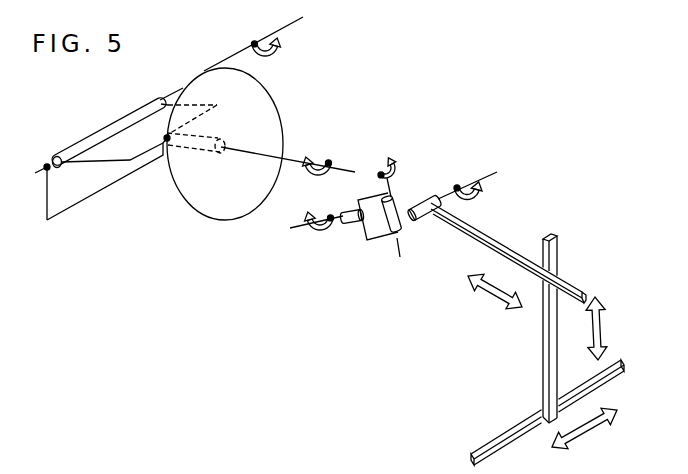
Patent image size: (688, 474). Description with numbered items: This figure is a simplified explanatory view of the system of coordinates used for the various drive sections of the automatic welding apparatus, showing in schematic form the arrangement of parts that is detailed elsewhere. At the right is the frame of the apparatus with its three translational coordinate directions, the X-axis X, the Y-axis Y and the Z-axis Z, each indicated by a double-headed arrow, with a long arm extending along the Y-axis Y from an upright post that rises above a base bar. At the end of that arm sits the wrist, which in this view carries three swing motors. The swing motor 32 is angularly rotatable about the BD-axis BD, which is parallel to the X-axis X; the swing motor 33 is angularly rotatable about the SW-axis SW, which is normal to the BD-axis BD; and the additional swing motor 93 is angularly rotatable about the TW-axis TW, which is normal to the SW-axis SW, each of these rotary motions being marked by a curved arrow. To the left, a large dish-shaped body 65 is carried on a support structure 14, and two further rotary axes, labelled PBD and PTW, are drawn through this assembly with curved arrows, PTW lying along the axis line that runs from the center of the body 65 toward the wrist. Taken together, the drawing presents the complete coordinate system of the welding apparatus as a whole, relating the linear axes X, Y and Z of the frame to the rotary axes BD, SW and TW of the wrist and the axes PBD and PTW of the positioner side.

The support bracket 14 is at (186, 233).
The workpiece (dish) 65 is at (260, 102).
The swing motor 33 is at (395, 196).
The swing motor 32 is at (437, 197).
The swing motor 93 is at (354, 226).
The positioner base drive rotation axis PBD is at (284, 36).
The positioner tilt axis PTW is at (295, 144).
The SW-axis SW is at (381, 157).
The TW-axis TW is at (301, 230).
The BD-axis BD is at (485, 178).
The X-axis X is at (572, 440).
The Y-axis Y is at (484, 285).
The Z-axis Z is at (596, 314).